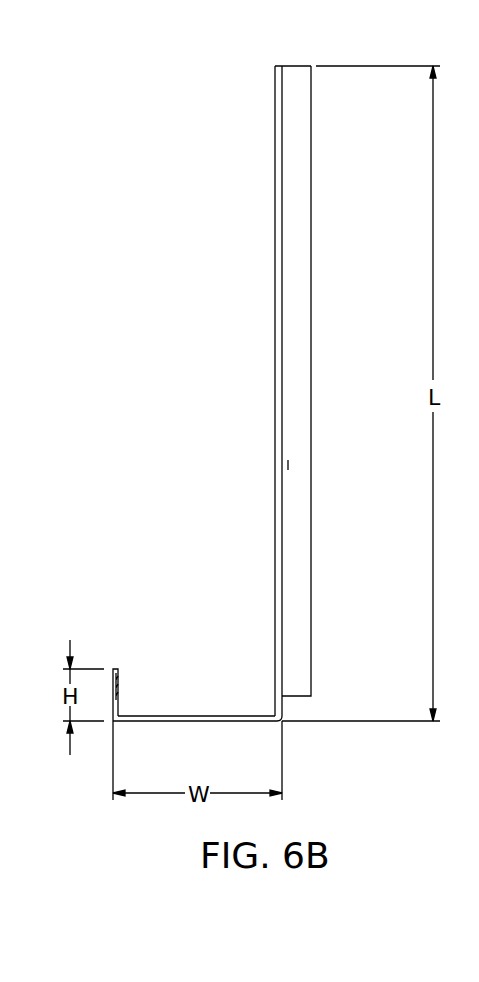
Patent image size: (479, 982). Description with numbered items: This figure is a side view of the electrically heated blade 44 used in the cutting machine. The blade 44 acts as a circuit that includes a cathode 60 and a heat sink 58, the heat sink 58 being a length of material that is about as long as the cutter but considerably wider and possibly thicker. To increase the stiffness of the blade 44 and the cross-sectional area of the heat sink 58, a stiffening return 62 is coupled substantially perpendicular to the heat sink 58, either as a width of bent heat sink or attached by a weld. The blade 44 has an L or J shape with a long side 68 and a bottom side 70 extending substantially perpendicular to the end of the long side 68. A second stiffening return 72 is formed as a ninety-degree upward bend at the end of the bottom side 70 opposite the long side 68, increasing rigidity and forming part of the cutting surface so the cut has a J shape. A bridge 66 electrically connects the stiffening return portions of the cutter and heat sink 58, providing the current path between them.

The cathode 60 is at (249, 415).
The heat sink 58 is at (275, 197).
The blade 44 is at (283, 362).
The stiffening return 62 is at (298, 283).
The long side 68 is at (286, 467).
The bottom side 70 is at (225, 722).
The bridge 66 is at (120, 672).
The stiffening return 72 is at (119, 700).